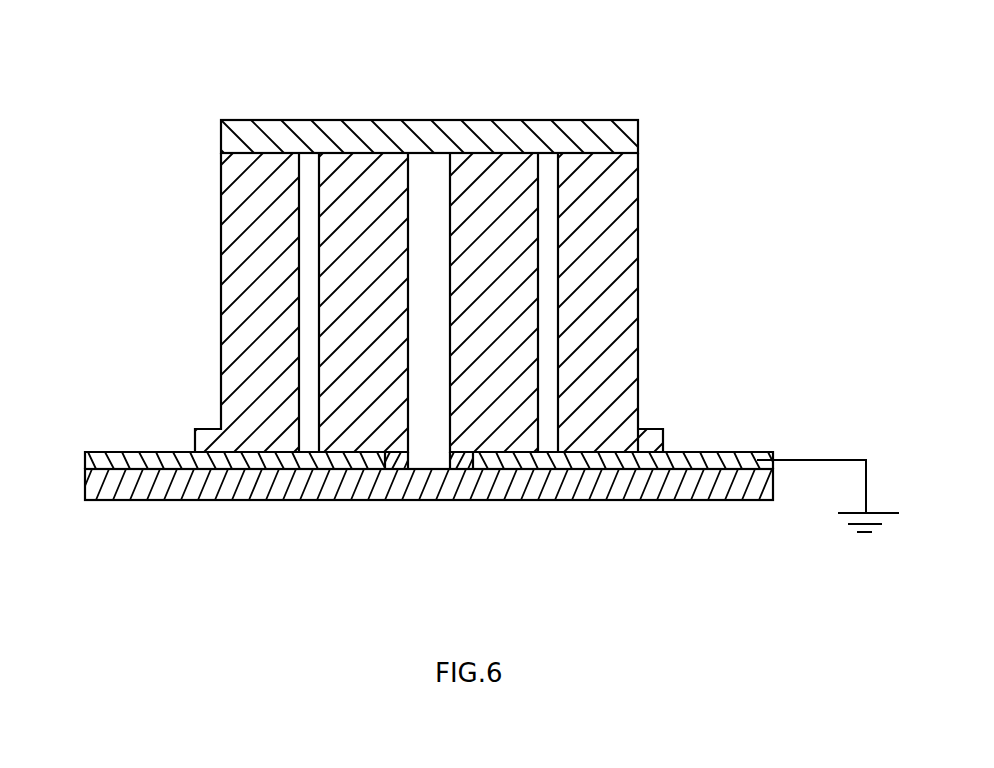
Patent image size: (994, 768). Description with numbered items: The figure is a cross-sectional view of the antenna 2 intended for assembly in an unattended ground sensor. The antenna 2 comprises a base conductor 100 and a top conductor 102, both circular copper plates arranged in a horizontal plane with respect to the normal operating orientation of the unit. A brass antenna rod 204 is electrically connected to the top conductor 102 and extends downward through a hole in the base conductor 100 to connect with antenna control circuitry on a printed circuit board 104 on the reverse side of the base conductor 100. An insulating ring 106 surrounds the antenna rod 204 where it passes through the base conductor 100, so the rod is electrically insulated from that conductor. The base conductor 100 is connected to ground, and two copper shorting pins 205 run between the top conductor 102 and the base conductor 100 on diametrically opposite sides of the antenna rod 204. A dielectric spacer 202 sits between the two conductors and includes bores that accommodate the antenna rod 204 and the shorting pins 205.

The antenna 2 is at (140, 201).
The base conductor 100 is at (717, 462).
The top conductor 102 is at (597, 135).
The printed circuit board 104 is at (617, 498).
The insulating ring 106 is at (457, 460).
The dielectric spacer 202 is at (615, 205).
The antenna rod 204 is at (432, 180).
The shorting pins 205 is at (550, 327).